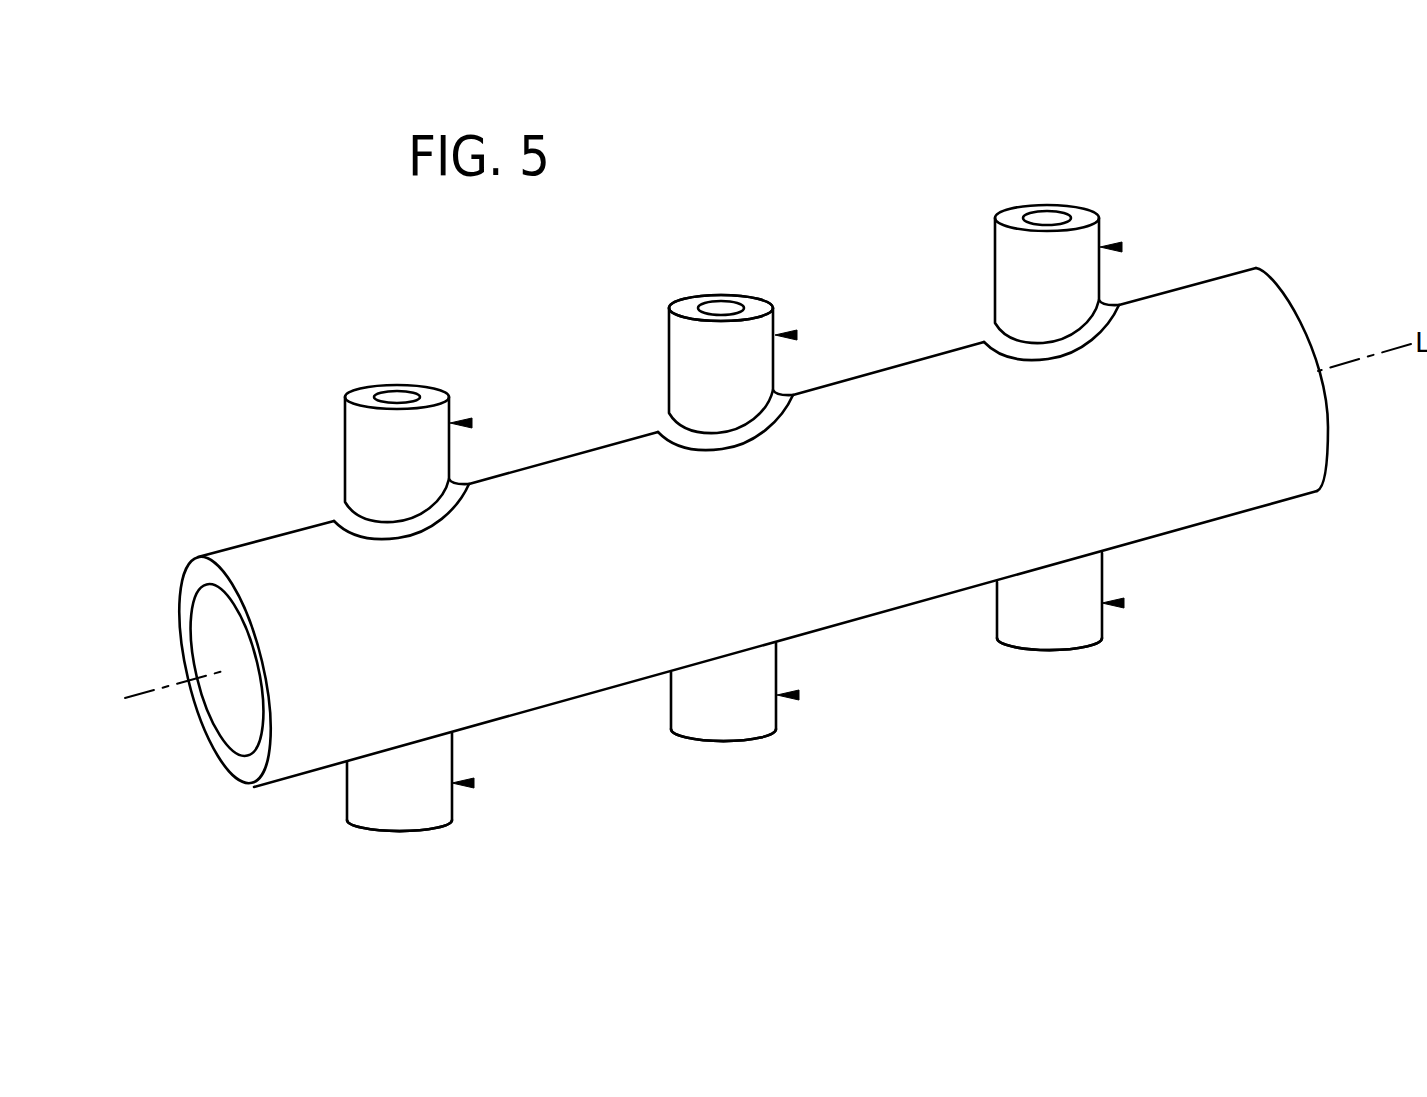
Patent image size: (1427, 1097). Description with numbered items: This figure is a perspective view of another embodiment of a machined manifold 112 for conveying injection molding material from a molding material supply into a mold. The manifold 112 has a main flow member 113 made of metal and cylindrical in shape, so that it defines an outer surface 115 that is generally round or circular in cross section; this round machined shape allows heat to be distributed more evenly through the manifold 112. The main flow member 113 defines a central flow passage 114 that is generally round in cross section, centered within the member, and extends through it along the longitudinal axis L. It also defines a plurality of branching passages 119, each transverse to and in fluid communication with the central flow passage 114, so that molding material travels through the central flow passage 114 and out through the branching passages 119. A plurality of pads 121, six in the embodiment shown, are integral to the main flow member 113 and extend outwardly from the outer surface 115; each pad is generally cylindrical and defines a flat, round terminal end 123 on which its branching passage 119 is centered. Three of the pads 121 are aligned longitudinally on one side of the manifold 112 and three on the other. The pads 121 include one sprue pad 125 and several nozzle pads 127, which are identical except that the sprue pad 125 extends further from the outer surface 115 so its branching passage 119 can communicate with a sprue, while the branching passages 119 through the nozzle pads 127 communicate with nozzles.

The machined manifold 112 is at (1256, 268).
The main flow member 113 is at (260, 577).
The central flow passage 114 is at (215, 612).
The outer surface 115 is at (818, 519).
The branching passages 119 is at (396, 397).
The pads 121 is at (470, 423).
The terminal end 123 is at (360, 394).
The sprue pad 125 is at (752, 295).
The nozzle pads 127 is at (360, 445).